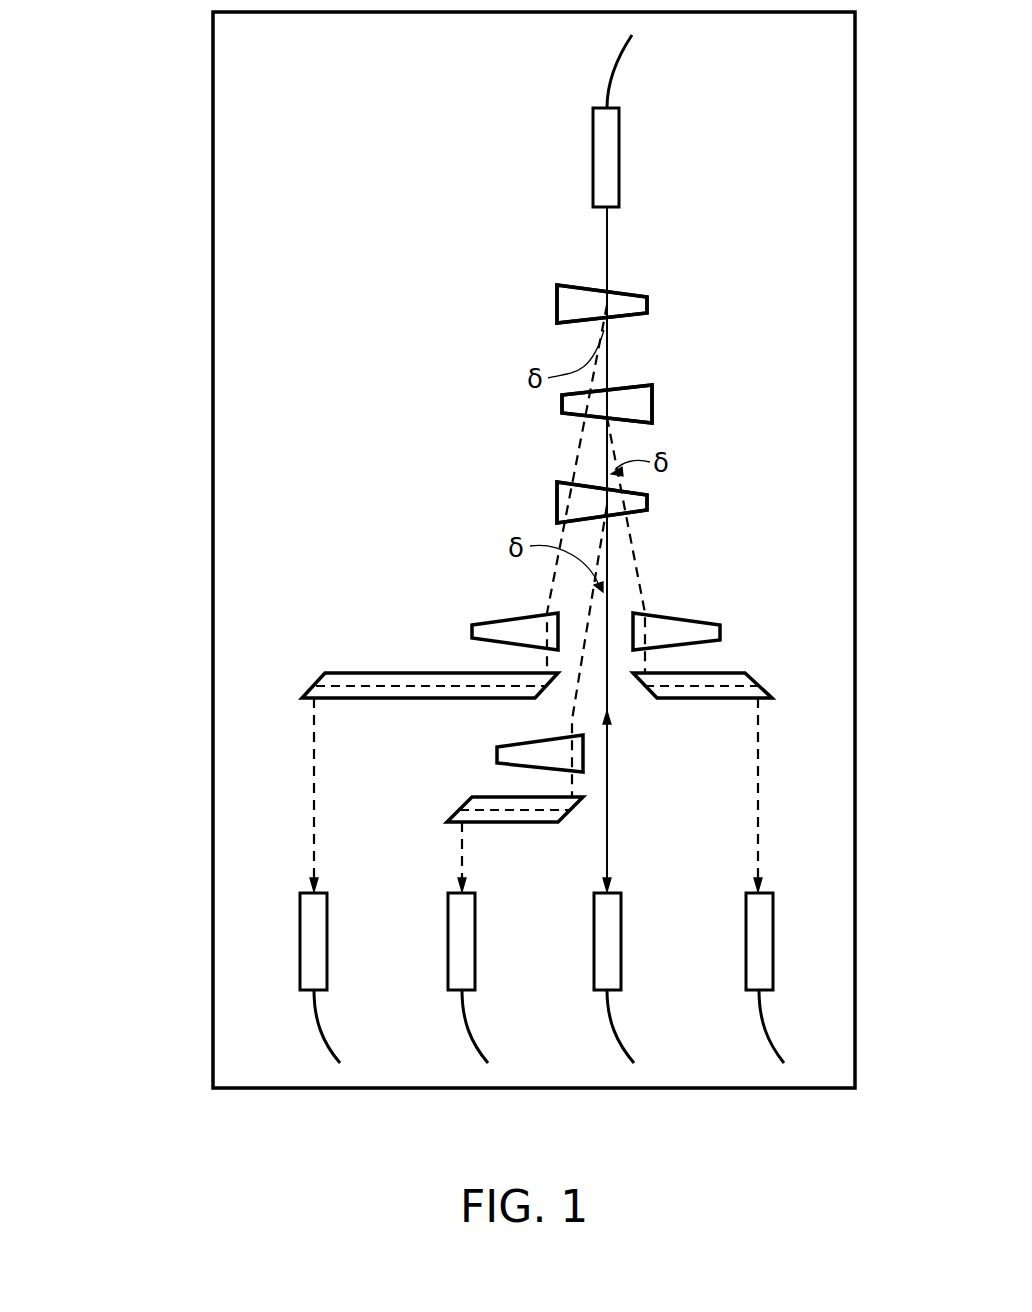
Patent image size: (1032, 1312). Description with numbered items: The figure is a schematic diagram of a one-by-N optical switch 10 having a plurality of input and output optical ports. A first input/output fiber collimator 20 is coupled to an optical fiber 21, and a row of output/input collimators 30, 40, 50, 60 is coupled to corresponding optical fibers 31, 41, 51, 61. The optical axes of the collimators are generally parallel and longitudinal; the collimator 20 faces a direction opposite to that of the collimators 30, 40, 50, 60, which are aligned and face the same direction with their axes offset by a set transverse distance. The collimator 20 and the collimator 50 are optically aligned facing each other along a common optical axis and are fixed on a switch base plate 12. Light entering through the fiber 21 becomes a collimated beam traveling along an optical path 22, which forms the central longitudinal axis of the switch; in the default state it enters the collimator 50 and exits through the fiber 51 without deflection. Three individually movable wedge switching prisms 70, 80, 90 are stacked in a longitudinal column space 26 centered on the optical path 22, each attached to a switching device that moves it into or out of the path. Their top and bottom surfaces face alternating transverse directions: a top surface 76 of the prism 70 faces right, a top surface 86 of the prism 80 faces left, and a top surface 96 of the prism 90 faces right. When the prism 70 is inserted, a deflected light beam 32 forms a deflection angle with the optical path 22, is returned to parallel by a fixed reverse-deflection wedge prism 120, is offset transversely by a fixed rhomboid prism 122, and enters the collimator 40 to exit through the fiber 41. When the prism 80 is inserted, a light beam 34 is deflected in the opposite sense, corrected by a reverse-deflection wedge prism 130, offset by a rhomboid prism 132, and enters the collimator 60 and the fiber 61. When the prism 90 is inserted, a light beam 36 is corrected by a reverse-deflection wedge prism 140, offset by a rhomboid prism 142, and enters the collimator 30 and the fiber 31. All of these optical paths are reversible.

The optical switch 10 is at (110, 687).
The switch base plate 12 is at (856, 212).
The input/output fiber collimator 20 is at (593, 163).
The optical fiber 21 is at (607, 72).
The optical path 22 is at (607, 258).
The longitudinal column space 26 is at (622, 720).
The output/input collimator 30 is at (300, 940).
The optical fiber 31 is at (318, 1040).
The deflected light beam 32 is at (572, 718).
The light beam 34 is at (632, 545).
The light beam 36 is at (313, 790).
The output/input collimator 40 is at (448, 940).
The optical fiber 41 is at (466, 1040).
The output/input collimator 50 is at (594, 940).
The optical fiber 51 is at (612, 1040).
The output/input collimator 60 is at (746, 940).
The optical fiber 61 is at (763, 1040).
The wedge switching prism 70 is at (515, 505).
The top surface 76 is at (647, 503).
The wedge switching prism 80 is at (703, 405).
The top surface 86 is at (562, 405).
The wedge switching prism 90 is at (515, 305).
The top surface 96 is at (647, 305).
The reverse-deflection wedge prism 120 is at (497, 755).
The rhomboid prism 122 is at (478, 822).
The reverse-deflection wedge prism 130 is at (720, 632).
The rhomboid prism 132 is at (760, 690).
The reverse-deflection wedge prism 140 is at (472, 632).
The rhomboid prism 142 is at (400, 673).